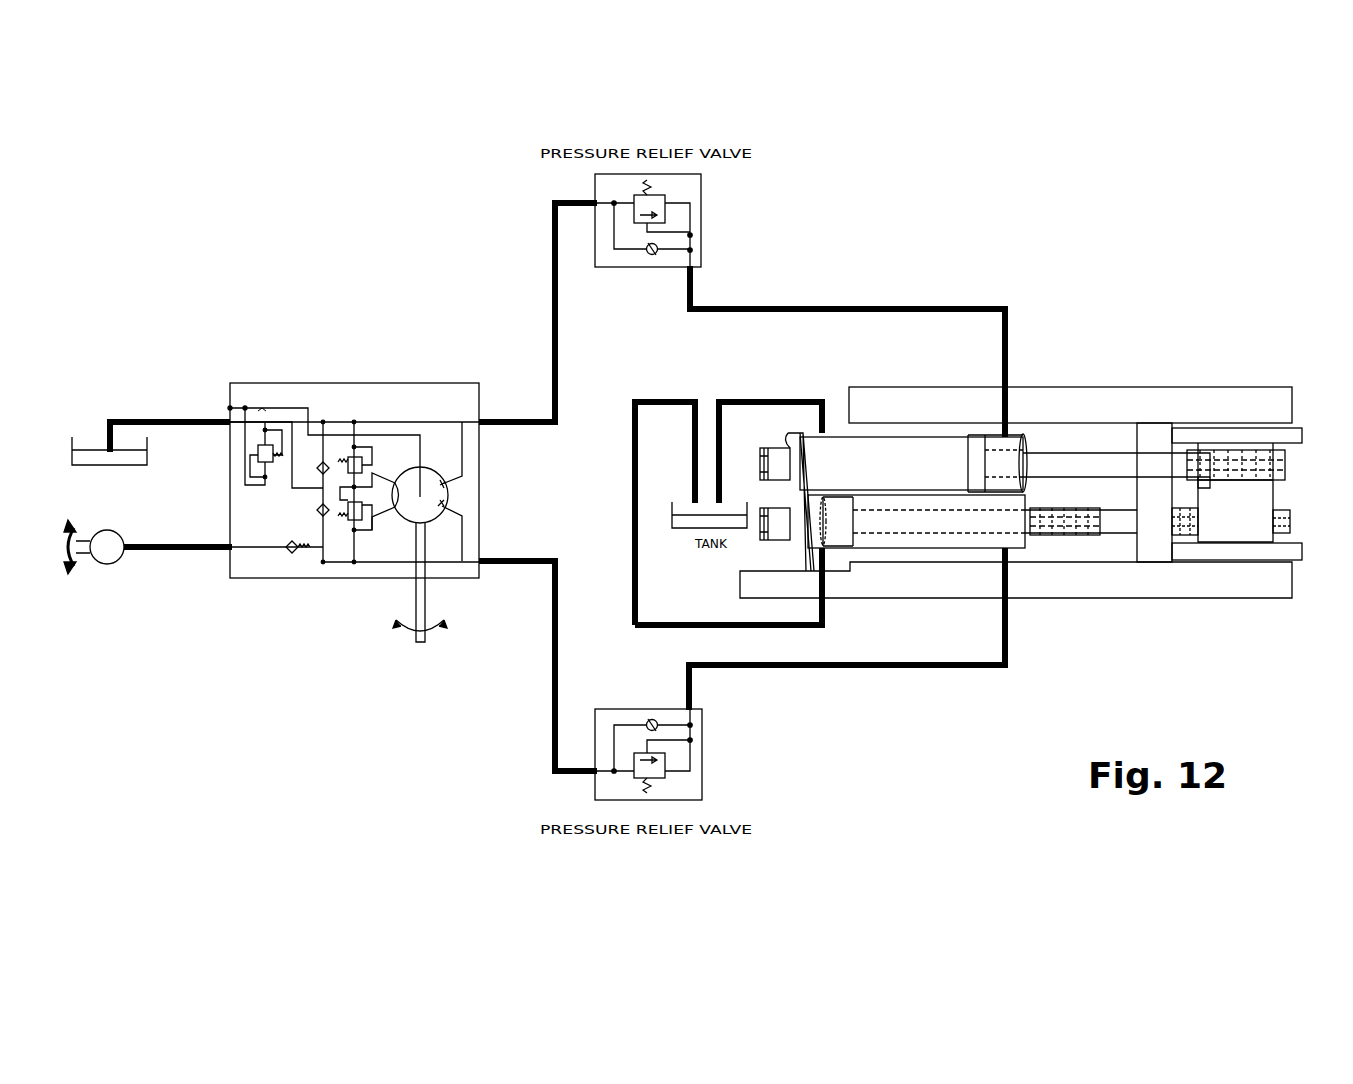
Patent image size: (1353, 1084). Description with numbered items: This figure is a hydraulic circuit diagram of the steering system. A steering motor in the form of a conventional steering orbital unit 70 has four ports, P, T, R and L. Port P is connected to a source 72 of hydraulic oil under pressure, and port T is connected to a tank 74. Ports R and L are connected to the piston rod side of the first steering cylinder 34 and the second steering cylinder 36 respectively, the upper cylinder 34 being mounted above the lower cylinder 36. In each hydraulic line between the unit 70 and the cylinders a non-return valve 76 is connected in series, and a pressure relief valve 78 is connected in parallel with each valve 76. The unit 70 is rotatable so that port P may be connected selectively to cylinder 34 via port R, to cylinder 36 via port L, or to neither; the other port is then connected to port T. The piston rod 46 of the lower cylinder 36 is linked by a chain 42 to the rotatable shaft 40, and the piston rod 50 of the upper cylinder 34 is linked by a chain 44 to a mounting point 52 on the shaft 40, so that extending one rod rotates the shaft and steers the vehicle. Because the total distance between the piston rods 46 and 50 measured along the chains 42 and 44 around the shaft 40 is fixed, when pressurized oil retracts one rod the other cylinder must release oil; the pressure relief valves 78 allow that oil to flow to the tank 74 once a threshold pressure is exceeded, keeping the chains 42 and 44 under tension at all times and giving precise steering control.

The first steering cylinder 34 is at (872, 455).
The second steering cylinder 36 is at (878, 540).
The rotatable shaft 40 is at (1246, 502).
The chain 42 is at (1185, 535).
The chain 44 is at (1282, 465).
The piston rod 46 is at (1030, 522).
The piston rod 50 is at (1105, 463).
The mounting point 52 is at (1200, 452).
The steering orbital unit 70 is at (281, 578).
The source of hydraulic oil under pressure 72 is at (109, 565).
The tank 74 is at (137, 465).
The non-return valve 76 is at (651, 256).
The pressure relief valve 78 is at (658, 205).